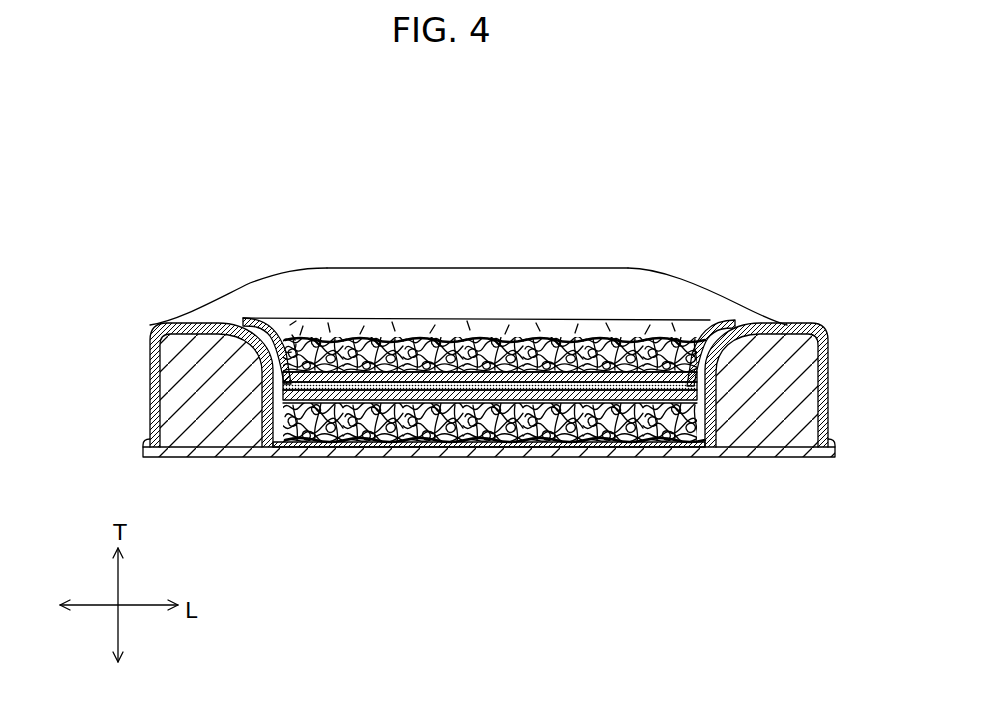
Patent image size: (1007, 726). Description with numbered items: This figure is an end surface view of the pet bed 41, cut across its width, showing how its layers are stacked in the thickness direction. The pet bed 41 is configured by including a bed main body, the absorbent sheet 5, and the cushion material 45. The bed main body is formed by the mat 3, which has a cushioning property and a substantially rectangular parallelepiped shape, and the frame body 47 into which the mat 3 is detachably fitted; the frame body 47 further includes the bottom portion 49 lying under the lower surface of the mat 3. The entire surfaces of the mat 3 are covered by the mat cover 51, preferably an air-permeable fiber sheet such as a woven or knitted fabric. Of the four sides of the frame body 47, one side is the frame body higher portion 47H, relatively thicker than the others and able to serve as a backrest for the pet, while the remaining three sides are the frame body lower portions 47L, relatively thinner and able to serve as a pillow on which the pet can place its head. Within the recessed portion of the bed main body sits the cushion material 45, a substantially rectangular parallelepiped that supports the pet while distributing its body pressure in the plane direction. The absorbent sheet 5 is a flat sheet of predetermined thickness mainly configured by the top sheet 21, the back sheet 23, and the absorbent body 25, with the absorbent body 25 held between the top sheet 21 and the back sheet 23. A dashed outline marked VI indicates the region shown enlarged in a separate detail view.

The pet bed 41 is at (762, 157).
The frame body 47 is at (314, 258).
The frame body higher portion 47H is at (628, 268).
The frame body lower portion 47L is at (787, 323).
The cushion material 45 is at (387, 340).
The absorbent sheet 5 is at (523, 313).
The top sheet 21 is at (631, 377).
The back sheet 23 is at (523, 395).
The absorbent body 25 is at (574, 386).
The mat 3 is at (396, 458).
The bottom portion 49 is at (337, 458).
The mat cover 51 is at (447, 458).
The detail view region VI is at (292, 335).